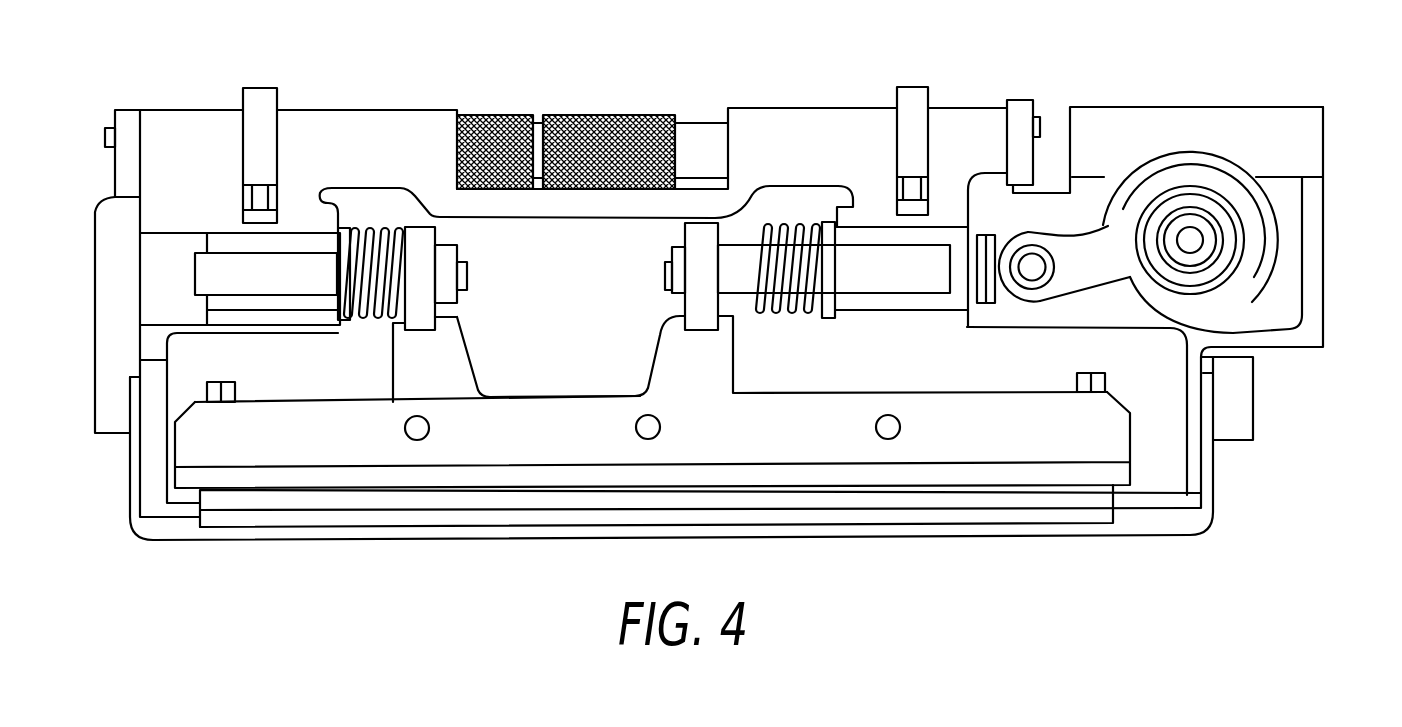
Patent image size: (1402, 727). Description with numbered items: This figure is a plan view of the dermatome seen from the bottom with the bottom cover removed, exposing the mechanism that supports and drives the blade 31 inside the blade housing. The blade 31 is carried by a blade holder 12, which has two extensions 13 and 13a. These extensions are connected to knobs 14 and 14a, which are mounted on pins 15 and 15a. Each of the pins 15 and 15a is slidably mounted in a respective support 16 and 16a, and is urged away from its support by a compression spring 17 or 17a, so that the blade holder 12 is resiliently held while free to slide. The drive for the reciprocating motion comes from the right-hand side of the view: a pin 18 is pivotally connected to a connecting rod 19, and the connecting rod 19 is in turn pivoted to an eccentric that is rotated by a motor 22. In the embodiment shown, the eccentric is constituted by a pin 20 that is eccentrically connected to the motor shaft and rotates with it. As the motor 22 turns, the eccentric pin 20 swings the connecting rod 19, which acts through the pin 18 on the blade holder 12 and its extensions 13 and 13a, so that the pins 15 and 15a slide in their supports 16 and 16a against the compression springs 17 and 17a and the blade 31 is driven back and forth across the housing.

The blade holder 12 is at (637, 447).
The extension 13 is at (707, 340).
The extension 13a is at (440, 357).
The knob 14 is at (702, 283).
The knob 14a is at (417, 233).
The pin 15 is at (740, 253).
The pin 15a is at (293, 287).
The support 16 is at (945, 213).
The support 16a is at (217, 203).
The compression spring 17 is at (795, 312).
The compression spring 17a is at (380, 320).
The pin 18 is at (1033, 272).
The connecting rod 19 is at (1093, 247).
The pin 20 is at (1183, 240).
The motor 22 is at (1224, 133).
The blade 31 is at (1042, 497).